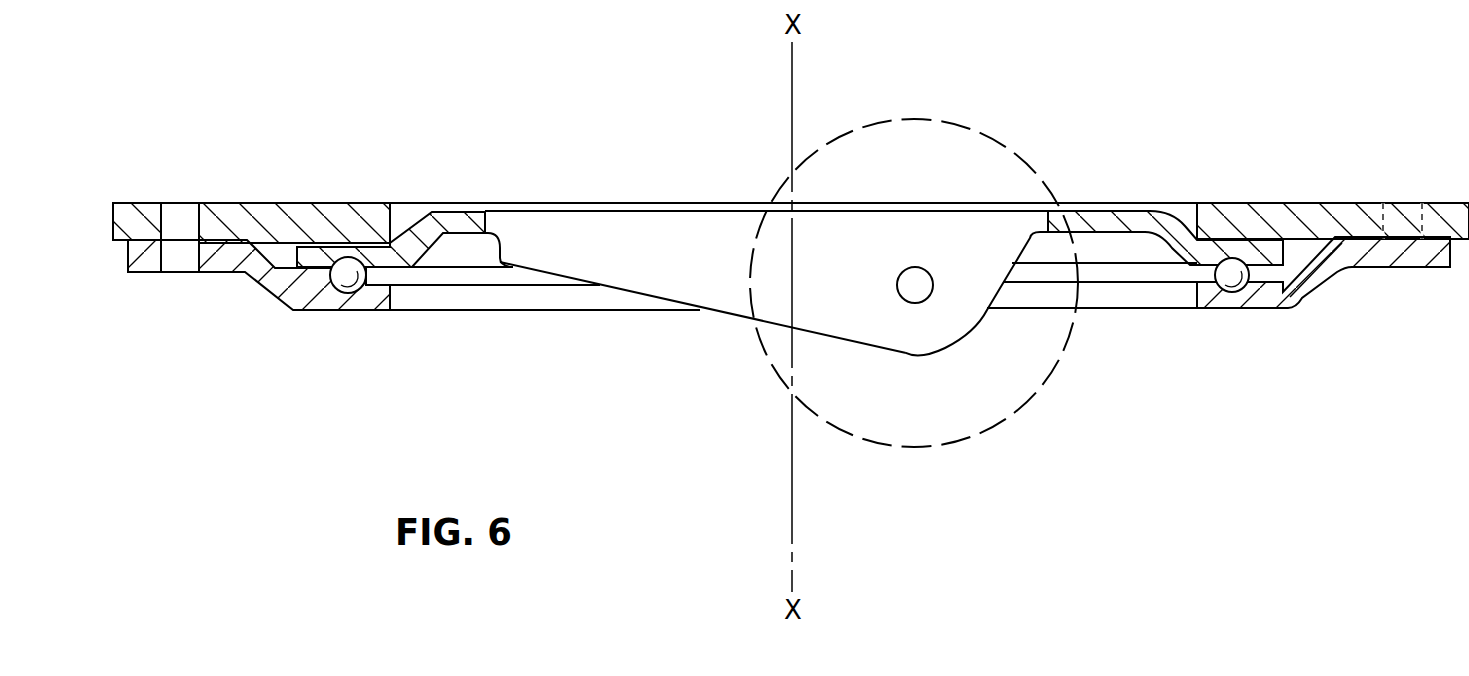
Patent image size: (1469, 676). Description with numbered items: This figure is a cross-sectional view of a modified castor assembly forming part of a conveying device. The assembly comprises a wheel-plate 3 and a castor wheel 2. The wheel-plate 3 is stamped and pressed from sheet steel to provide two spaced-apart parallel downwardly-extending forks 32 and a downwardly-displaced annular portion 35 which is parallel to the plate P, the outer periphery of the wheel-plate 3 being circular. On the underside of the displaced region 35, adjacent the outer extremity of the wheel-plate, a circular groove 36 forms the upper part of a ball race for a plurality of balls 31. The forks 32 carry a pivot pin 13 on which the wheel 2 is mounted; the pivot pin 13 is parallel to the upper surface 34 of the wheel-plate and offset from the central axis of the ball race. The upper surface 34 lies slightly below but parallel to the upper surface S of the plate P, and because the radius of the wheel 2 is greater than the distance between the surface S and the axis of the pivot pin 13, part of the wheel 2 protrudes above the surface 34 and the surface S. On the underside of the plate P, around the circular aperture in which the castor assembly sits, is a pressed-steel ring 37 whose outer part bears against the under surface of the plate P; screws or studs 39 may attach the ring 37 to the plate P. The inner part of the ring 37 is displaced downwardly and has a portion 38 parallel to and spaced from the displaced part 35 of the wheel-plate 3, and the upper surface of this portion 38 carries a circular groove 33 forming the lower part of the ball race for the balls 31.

The castor wheel 2 is at (985, 165).
The wheel-plate 3 is at (1117, 215).
The pivot pin 13 is at (897, 287).
The balls 31 is at (1225, 284).
The downwardly-extending forks 32 is at (672, 283).
The circular groove 33 is at (352, 265).
The upper surface of the wheel-plate 34 is at (544, 202).
The downwardly-displaced annular portion 35 is at (1283, 293).
The circular groove 36 is at (1226, 257).
The ring 37 is at (1362, 258).
The displaced portion of the ring 38 is at (1253, 300).
The screws or studs 39 is at (187, 215).
The upper surface of the plate S is at (1331, 203).
The plate P is at (1457, 213).